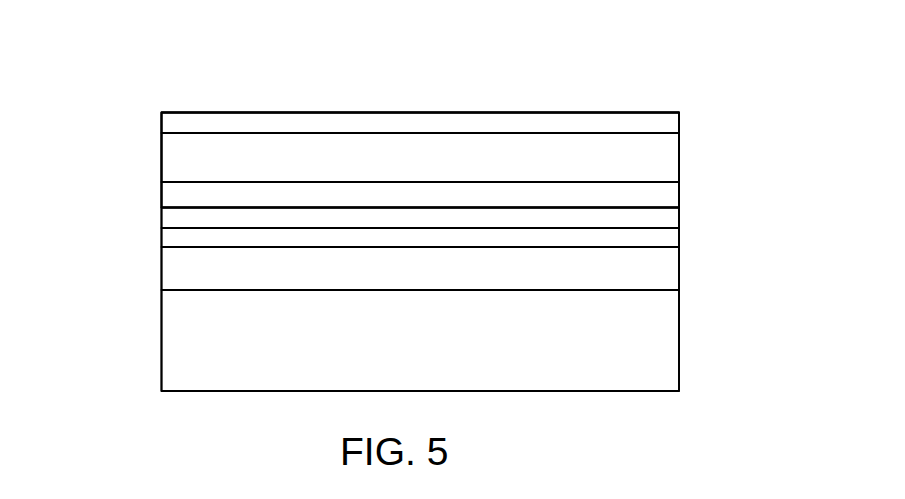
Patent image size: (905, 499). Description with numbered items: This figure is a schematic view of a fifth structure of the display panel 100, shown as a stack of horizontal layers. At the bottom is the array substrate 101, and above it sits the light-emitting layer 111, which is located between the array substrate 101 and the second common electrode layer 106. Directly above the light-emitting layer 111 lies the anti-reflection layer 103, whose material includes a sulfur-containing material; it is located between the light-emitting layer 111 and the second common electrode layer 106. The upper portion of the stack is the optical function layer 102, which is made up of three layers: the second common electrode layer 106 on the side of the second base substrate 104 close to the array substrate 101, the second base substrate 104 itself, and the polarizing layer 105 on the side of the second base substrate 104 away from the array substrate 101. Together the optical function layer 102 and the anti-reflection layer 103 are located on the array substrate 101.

The display panel 100 is at (134, 38).
The array substrate 101 is at (112, 250).
The optical function layer 102 is at (82, 108).
The anti-reflection layer 103 is at (650, 217).
The second base substrate 104 is at (217, 162).
The polarizing layer 105 is at (217, 122).
The second common electrode layer 106 is at (215, 197).
The light-emitting layer 111 is at (650, 238).